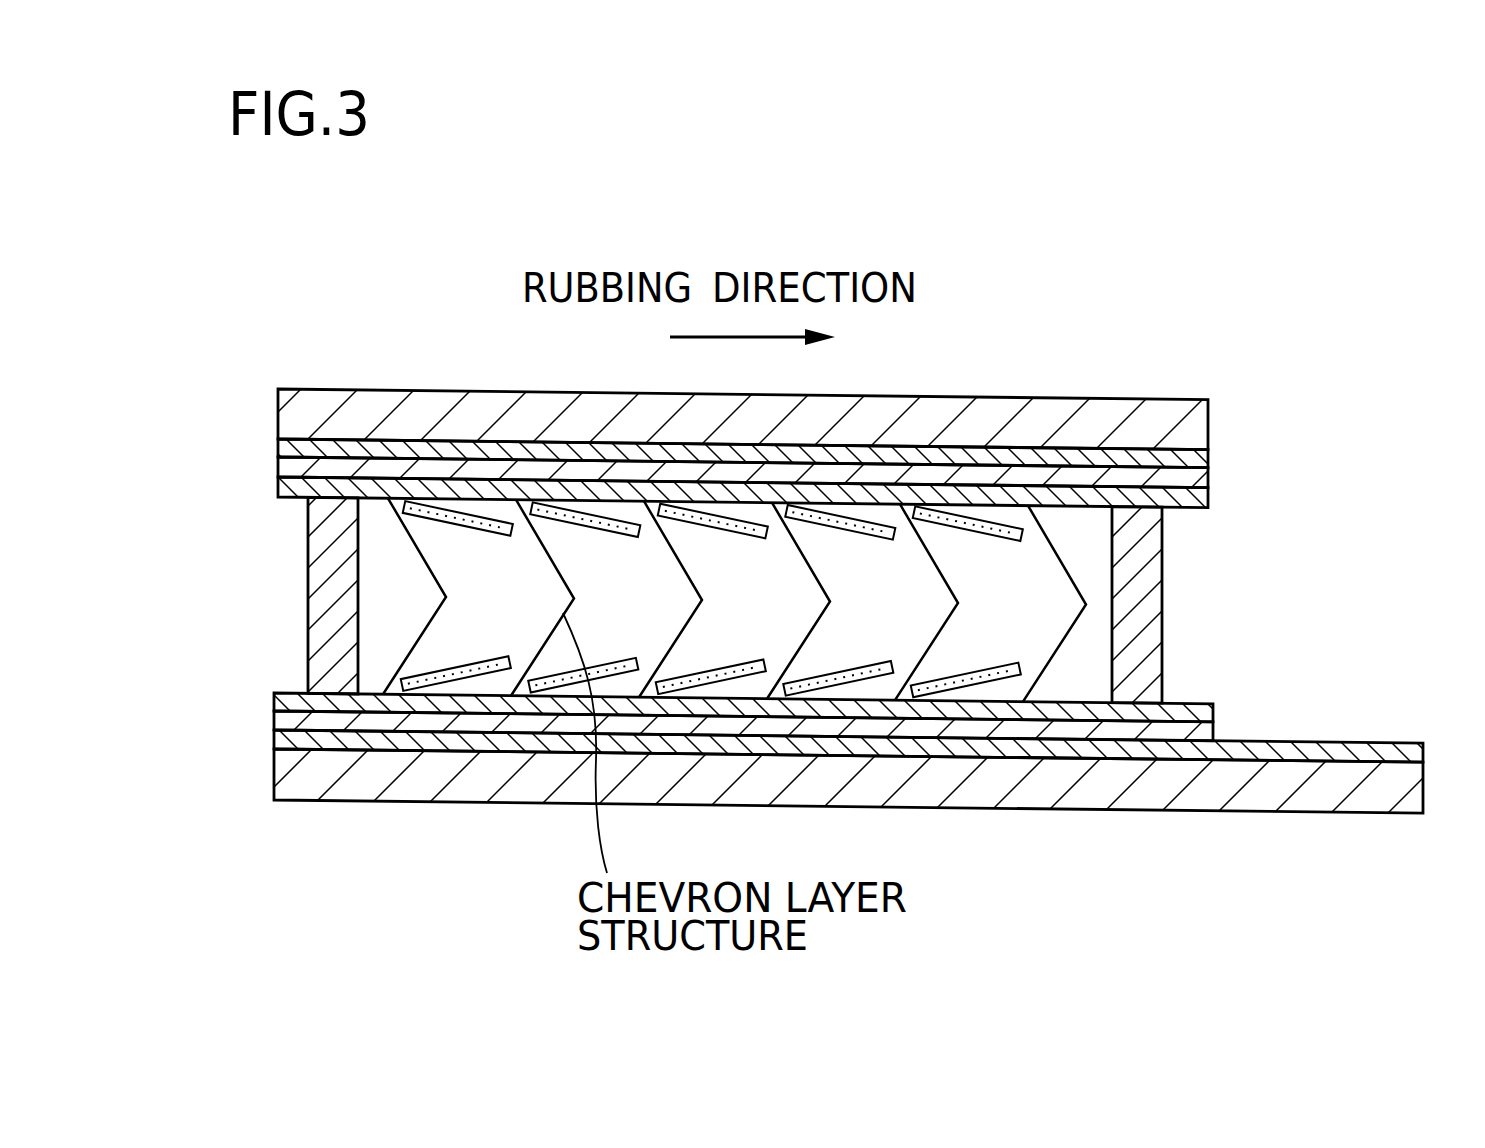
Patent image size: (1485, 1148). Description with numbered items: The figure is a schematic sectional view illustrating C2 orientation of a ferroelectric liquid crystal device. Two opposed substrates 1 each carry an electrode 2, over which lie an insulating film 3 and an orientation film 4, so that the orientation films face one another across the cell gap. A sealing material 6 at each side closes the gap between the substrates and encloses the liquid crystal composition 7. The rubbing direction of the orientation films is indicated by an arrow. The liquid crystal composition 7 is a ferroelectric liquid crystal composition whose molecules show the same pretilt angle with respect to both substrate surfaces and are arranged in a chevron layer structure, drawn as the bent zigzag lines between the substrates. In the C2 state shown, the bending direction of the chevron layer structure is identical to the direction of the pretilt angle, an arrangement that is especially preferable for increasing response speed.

The substrate 1 is at (990, 425).
The electrode 2 is at (1078, 457).
The insulating film 3 is at (1190, 477).
The orientation film 4 is at (1193, 498).
The sealing material 6 is at (1132, 610).
The liquid crystal composition 7 is at (958, 683).